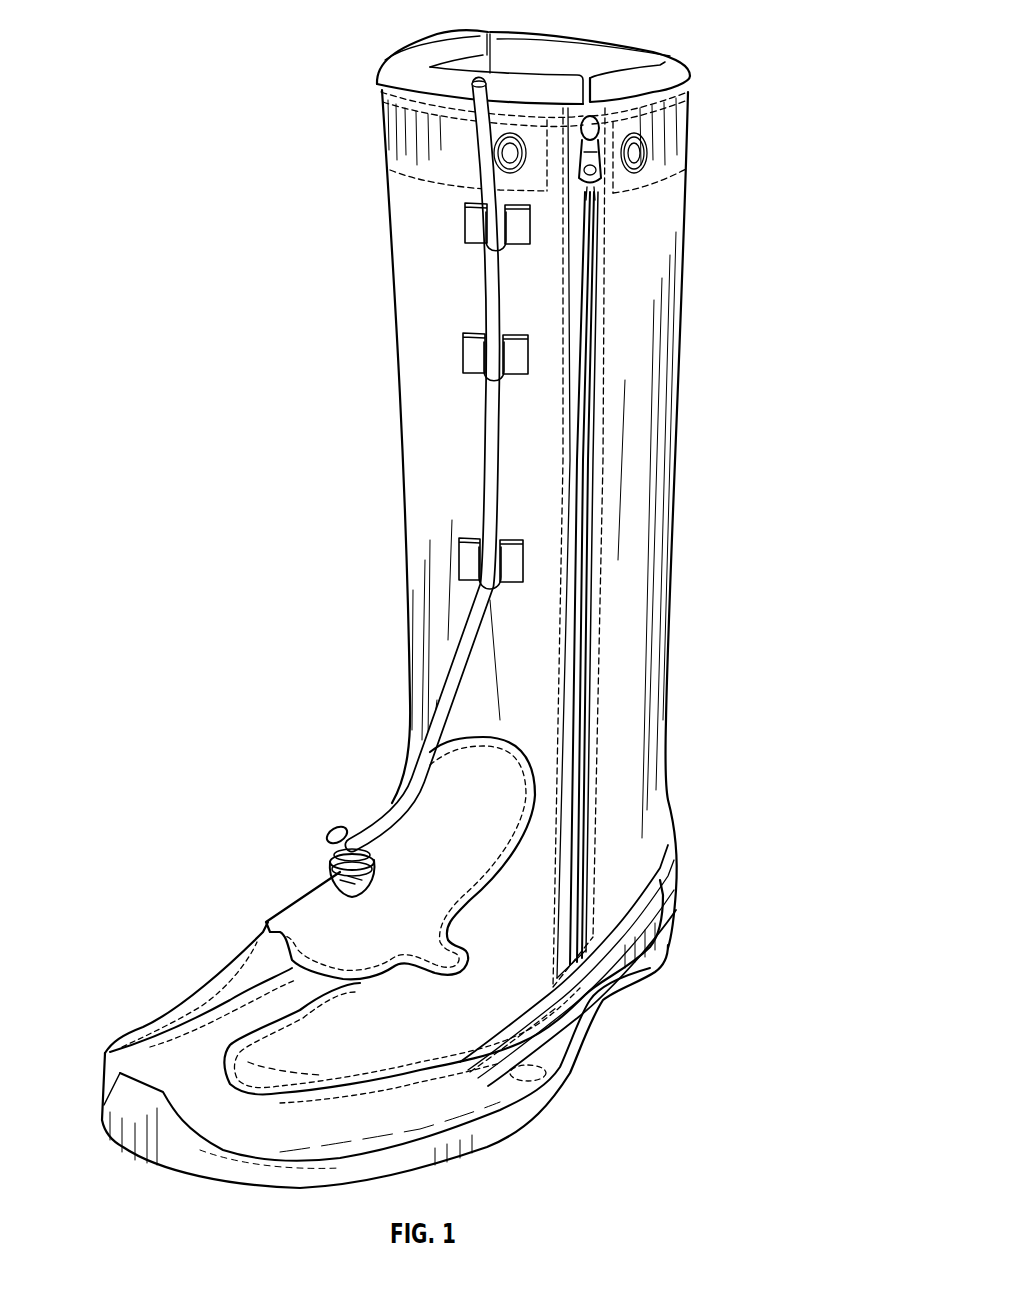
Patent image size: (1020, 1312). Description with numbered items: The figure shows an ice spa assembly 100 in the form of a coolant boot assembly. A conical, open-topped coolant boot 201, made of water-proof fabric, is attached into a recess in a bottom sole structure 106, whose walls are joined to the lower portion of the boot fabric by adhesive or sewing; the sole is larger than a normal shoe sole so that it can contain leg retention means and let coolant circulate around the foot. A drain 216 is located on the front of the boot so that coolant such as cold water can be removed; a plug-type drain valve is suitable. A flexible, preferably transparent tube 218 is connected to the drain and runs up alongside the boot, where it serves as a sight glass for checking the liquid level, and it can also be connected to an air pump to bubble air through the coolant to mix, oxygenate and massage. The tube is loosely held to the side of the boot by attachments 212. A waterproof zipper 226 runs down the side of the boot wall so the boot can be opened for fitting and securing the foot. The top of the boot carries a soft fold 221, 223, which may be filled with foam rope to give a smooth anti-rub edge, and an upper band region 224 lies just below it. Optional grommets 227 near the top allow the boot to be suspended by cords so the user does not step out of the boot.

The footwear system 100 is at (202, 46).
The bottom sole structure 106 is at (672, 938).
The coolant boot 201 is at (675, 410).
The conduit tube attachment 212 is at (463, 355).
The drain 216 is at (330, 832).
The flexible tube 218 is at (483, 300).
The fold 221 is at (683, 68).
The fold 223 is at (377, 70).
The cuff panel 224 is at (393, 153).
The waterproof zipper 226 is at (594, 345).
The grommet 227 is at (642, 148).